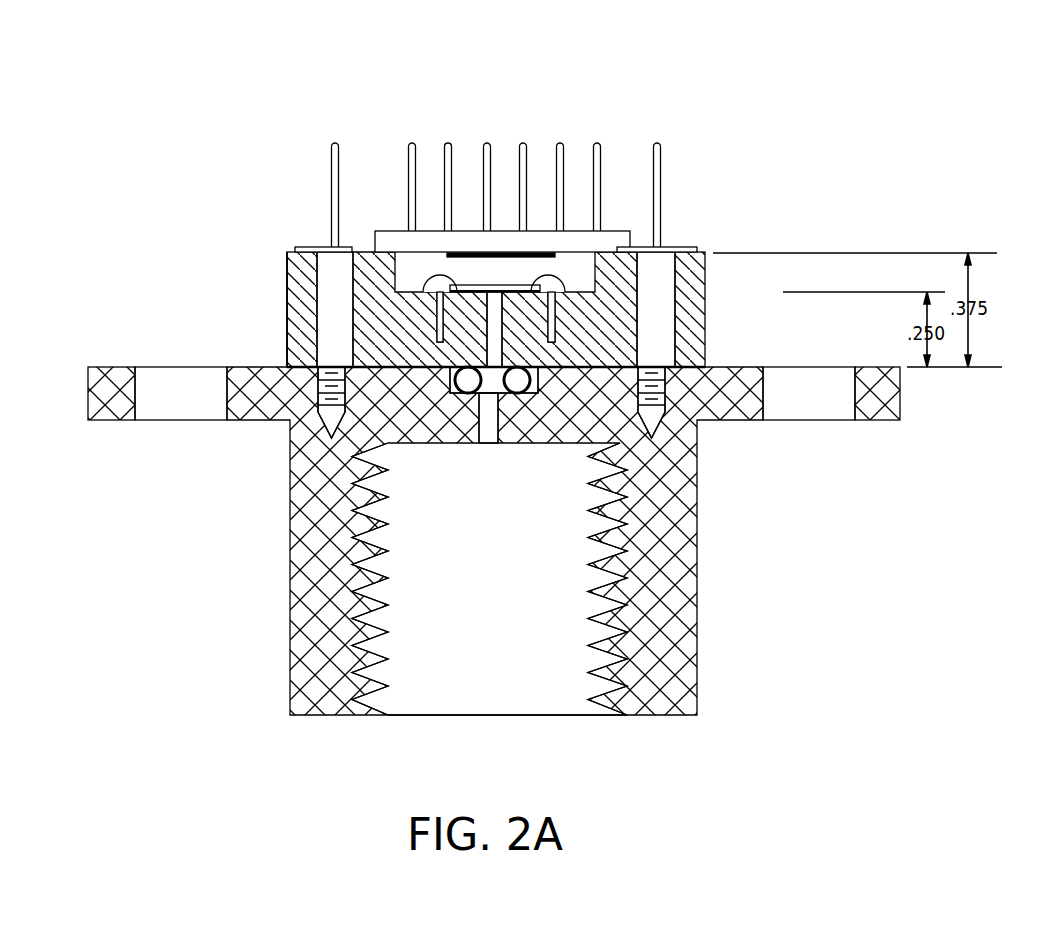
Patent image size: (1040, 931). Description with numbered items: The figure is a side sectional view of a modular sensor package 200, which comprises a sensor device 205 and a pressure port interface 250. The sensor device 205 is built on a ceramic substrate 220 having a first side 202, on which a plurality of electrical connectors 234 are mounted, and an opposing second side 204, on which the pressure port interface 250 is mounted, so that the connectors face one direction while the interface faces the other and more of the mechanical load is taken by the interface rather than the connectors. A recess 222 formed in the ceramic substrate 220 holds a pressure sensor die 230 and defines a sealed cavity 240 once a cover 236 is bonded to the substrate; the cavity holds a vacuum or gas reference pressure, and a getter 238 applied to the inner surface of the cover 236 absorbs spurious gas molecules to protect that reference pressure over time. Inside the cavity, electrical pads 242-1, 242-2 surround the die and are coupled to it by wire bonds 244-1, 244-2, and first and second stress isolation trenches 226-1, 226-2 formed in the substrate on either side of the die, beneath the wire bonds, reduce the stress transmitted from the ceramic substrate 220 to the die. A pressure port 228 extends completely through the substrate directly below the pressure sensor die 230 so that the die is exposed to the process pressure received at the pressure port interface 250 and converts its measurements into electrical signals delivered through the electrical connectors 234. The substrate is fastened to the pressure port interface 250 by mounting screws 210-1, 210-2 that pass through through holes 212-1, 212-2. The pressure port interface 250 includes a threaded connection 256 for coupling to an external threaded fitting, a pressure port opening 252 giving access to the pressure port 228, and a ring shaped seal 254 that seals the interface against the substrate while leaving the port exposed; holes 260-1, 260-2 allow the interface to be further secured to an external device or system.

The modular sensor package 200 is at (180, 103).
The first side 202 is at (286, 253).
The second side 204 is at (258, 420).
The sensor device 205 is at (841, 178).
The mounting screw 210-1 is at (328, 317).
The mounting screw 210-2 is at (660, 390).
The through hole 212-1 is at (286, 337).
The through hole 212-2 is at (700, 330).
The ceramic substrate 220 is at (286, 323).
The recess 222 is at (352, 278).
The stress isolation trench 226-1 is at (325, 385).
The stress isolation trench 226-2 is at (667, 372).
The pressure port 228 is at (630, 473).
The pressure sensor die 230 is at (467, 270).
The electrical connectors 234 is at (488, 132).
The cover 236 is at (556, 266).
The getter 238 is at (542, 250).
The sealed cavity 240 is at (633, 240).
The electrical pad 242-1 is at (437, 300).
The electrical pad 242-2 is at (557, 300).
The wire bond 244-1 is at (330, 248).
The wire bond 244-2 is at (740, 274).
The pressure port interface 250 is at (663, 552).
The pressure port opening 252 is at (485, 432).
The ring shaped seal 254 is at (447, 382).
The threaded connection 256 is at (387, 702).
The hole 260-1 is at (147, 420).
The hole 260-2 is at (822, 420).